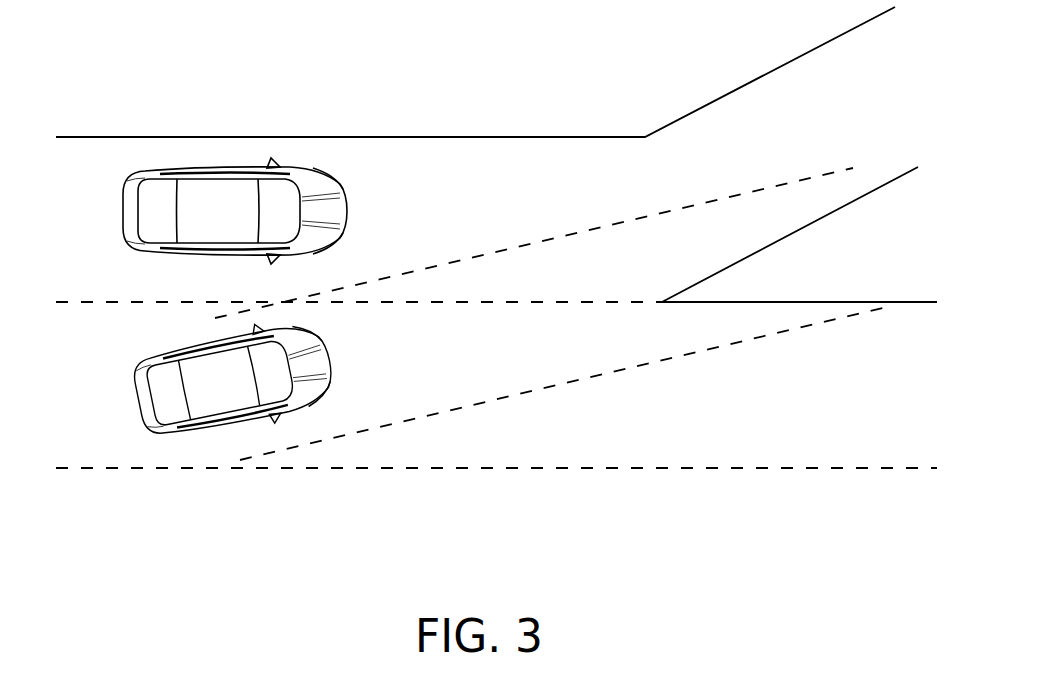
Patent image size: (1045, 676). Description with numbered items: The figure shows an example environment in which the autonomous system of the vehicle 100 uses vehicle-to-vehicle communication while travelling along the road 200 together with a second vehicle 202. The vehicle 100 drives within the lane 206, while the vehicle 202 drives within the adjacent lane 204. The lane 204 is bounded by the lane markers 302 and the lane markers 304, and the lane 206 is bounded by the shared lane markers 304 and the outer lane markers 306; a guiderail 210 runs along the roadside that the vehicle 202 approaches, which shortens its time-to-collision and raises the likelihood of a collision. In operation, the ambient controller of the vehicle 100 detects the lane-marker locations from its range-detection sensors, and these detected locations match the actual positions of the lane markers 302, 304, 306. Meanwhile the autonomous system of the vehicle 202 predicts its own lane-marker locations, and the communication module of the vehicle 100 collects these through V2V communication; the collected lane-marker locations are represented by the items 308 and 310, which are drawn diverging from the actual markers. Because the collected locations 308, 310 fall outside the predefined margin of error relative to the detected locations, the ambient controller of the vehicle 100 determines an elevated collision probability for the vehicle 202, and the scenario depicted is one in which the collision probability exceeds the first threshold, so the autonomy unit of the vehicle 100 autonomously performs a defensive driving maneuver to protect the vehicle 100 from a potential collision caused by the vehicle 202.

The vehicle 100 is at (122, 211).
The road 200 is at (193, 137).
The vehicle 202 is at (131, 397).
The lane 204 is at (770, 431).
The lane 206 is at (468, 208).
The guiderail 210 is at (667, 300).
The lane markers 302 is at (505, 469).
The lane markers 304 is at (504, 304).
The lane markers 306 is at (500, 137).
The collected lane-marker location 308 is at (568, 381).
The collected lane-marker location 310 is at (585, 230).